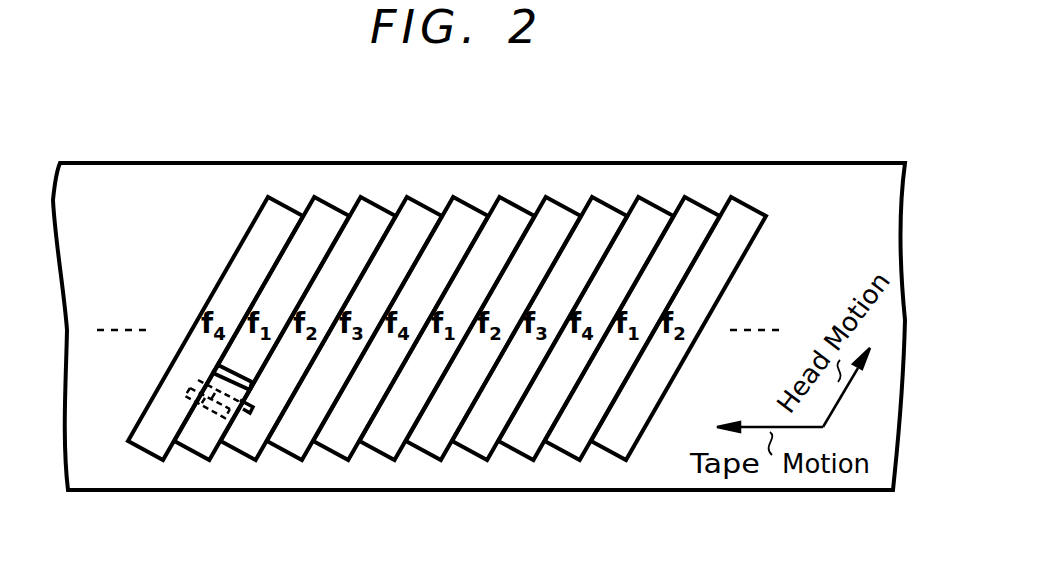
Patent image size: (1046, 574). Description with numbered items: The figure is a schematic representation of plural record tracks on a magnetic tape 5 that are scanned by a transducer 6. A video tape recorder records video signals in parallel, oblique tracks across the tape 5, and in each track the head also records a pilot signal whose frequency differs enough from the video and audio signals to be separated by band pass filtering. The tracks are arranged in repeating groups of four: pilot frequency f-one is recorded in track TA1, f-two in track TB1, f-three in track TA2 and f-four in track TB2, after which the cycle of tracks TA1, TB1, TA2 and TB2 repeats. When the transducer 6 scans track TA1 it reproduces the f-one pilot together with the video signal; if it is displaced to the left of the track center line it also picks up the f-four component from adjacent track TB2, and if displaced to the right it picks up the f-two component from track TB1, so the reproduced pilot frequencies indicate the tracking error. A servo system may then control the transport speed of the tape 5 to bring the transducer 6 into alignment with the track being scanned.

The magnetic tape 5 is at (628, 162).
The transducer 6 is at (225, 408).
The track TA1 is at (196, 453).
The track TA2 is at (289, 453).
The track TB1 is at (243, 453).
The track TB2 is at (150, 453).